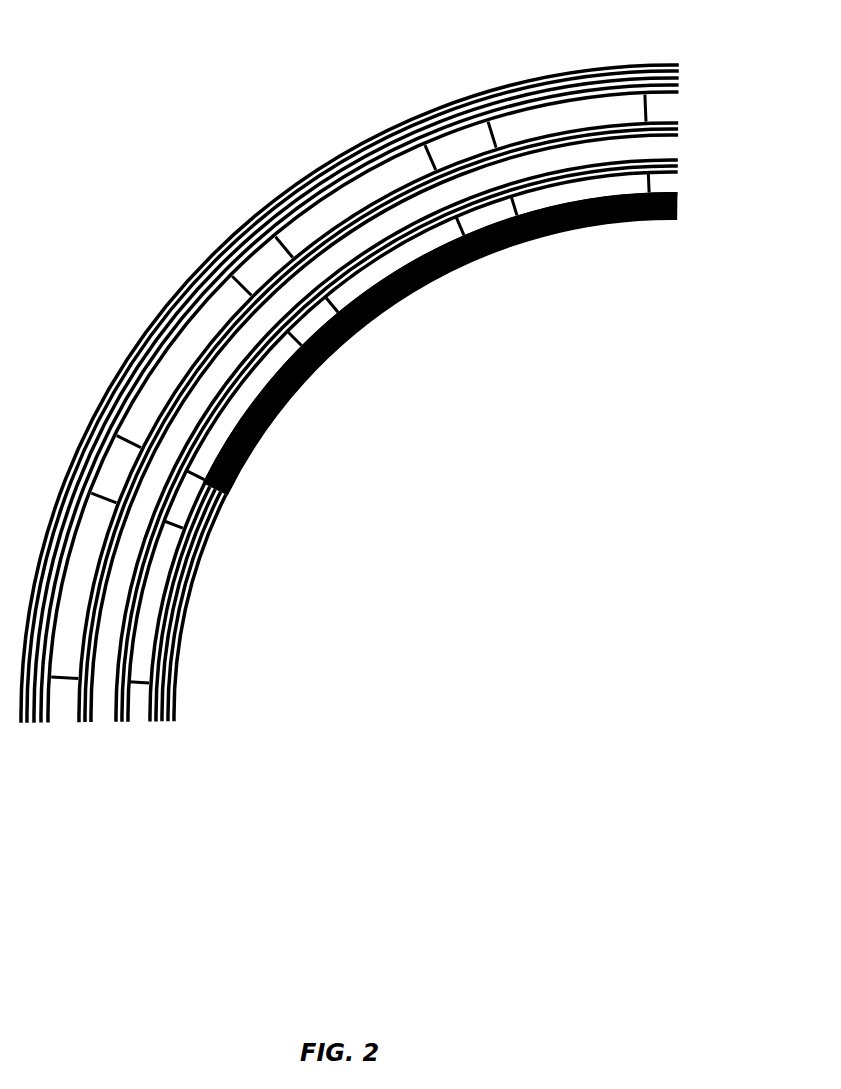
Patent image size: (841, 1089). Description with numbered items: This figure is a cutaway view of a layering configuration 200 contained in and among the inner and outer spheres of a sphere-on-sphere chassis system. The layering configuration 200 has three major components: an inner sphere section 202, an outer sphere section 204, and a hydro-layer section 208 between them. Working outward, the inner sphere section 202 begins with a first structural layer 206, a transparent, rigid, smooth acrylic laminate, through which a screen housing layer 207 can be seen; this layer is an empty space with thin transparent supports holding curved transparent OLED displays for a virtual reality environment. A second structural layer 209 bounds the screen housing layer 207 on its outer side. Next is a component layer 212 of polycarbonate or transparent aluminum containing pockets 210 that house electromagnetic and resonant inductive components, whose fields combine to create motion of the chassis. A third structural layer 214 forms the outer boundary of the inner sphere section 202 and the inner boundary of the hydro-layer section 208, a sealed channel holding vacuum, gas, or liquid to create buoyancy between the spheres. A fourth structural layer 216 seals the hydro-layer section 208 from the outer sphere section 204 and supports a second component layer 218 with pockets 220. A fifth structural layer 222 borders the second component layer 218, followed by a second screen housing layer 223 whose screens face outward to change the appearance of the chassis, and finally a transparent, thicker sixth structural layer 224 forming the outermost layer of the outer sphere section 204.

The layering configuration 200 is at (196, 74).
The inner sphere section 202 is at (434, 481).
The outer sphere section 204 is at (395, 412).
The first structural layer 206 is at (219, 497).
The screen housing layer 207 is at (455, 452).
The hydro-layer section 208 is at (100, 708).
The second structural layer 209 is at (682, 195).
The pockets 210 is at (316, 319).
The component layer 212 is at (388, 261).
The third structural layer 214 is at (682, 167).
The fourth structural layer 216 is at (682, 127).
The second component layer 218 is at (128, 355).
The pockets 220 is at (226, 256).
The fifth structural layer 222 is at (683, 80).
The second screen housing layer 223 is at (683, 73).
The sixth structural layer 224 is at (399, 375).